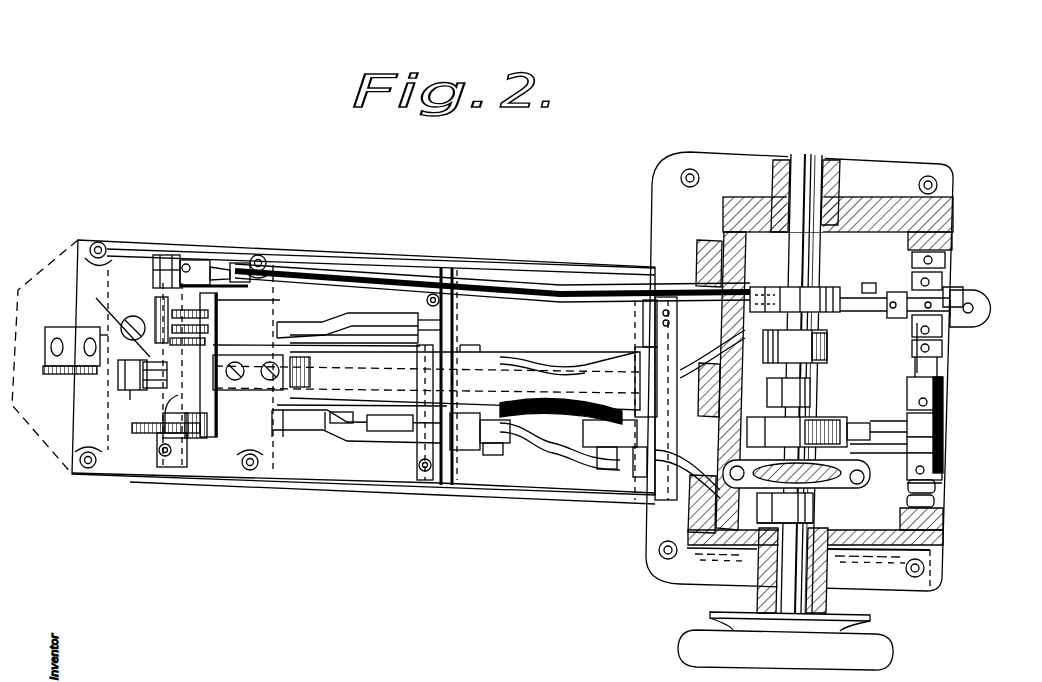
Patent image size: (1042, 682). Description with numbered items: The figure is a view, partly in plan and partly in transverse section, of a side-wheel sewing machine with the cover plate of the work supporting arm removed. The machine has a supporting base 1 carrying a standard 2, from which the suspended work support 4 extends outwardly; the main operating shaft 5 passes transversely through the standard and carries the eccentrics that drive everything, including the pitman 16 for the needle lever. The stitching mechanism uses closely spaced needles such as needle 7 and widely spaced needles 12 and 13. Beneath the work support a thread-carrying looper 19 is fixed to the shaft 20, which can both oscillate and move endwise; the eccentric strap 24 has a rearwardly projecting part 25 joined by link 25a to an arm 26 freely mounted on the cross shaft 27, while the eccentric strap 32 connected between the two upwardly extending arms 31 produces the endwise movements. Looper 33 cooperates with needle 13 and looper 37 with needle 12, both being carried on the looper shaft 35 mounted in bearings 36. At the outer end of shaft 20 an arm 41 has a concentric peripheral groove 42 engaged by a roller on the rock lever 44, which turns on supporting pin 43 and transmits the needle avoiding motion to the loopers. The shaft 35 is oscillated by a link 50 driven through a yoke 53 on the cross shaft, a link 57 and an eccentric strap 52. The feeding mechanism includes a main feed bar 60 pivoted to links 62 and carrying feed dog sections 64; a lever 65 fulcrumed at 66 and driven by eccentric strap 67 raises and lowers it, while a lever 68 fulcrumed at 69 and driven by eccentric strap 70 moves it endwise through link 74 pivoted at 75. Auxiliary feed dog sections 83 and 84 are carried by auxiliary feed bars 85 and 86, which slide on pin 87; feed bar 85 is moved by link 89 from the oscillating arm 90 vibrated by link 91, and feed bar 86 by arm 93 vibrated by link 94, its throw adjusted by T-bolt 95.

The supporting base 1 is at (887, 580).
The standard 2 is at (863, 215).
The work support 4 is at (542, 490).
The main operating shaft 5 is at (820, 247).
The needle 7 is at (155, 375).
The needle 12 is at (173, 413).
The needle 13 is at (220, 303).
The pitman 16 is at (830, 507).
The thread-carrying looper 19 is at (115, 315).
The shaft 20 is at (750, 347).
The eccentric strap 24 is at (860, 465).
The rearwardly projecting part 25 is at (837, 403).
The link 25a is at (943, 450).
The arm 26 is at (943, 433).
The cross shaft 27 is at (942, 366).
The upwardly extending arms 31 is at (943, 380).
The eccentric strap 32 is at (812, 372).
The looper 33 is at (222, 305).
The looper shaft 35 is at (200, 268).
The bearings 36 is at (170, 266).
The looper 37 is at (212, 412).
The arm 41 is at (120, 380).
The concentric peripheral groove 42 is at (165, 385).
The supporting pin 43 is at (133, 316).
The rock lever 44 is at (70, 328).
The link 50 is at (567, 288).
The eccentric strap 52 is at (850, 300).
The yoke 53 is at (950, 290).
The link 57 is at (986, 297).
The main feed bar 60 is at (460, 347).
The links 62 is at (356, 407).
The feed dog sections 64 is at (225, 342).
The lever 65 is at (697, 348).
The fulcrum 66 is at (200, 332).
The eccentric strap 67 is at (827, 342).
The lever 68 is at (633, 473).
The fulcrum 69 is at (205, 318).
The eccentric strap 70 is at (830, 520).
The link 74 is at (530, 442).
The pivot 75 is at (495, 448).
The auxiliary feed dog section 83 is at (140, 427).
The auxiliary feed dog section 84 is at (165, 262).
The auxiliary feed bar 85 is at (388, 432).
The auxiliary feed bar 86 is at (357, 352).
The pin 87 is at (507, 357).
The link 89 is at (347, 433).
The oscillating arm 90 is at (450, 425).
The link 91 is at (370, 415).
The arm 93 is at (410, 380).
The link 94 is at (350, 313).
The T-bolt 95 is at (452, 283).